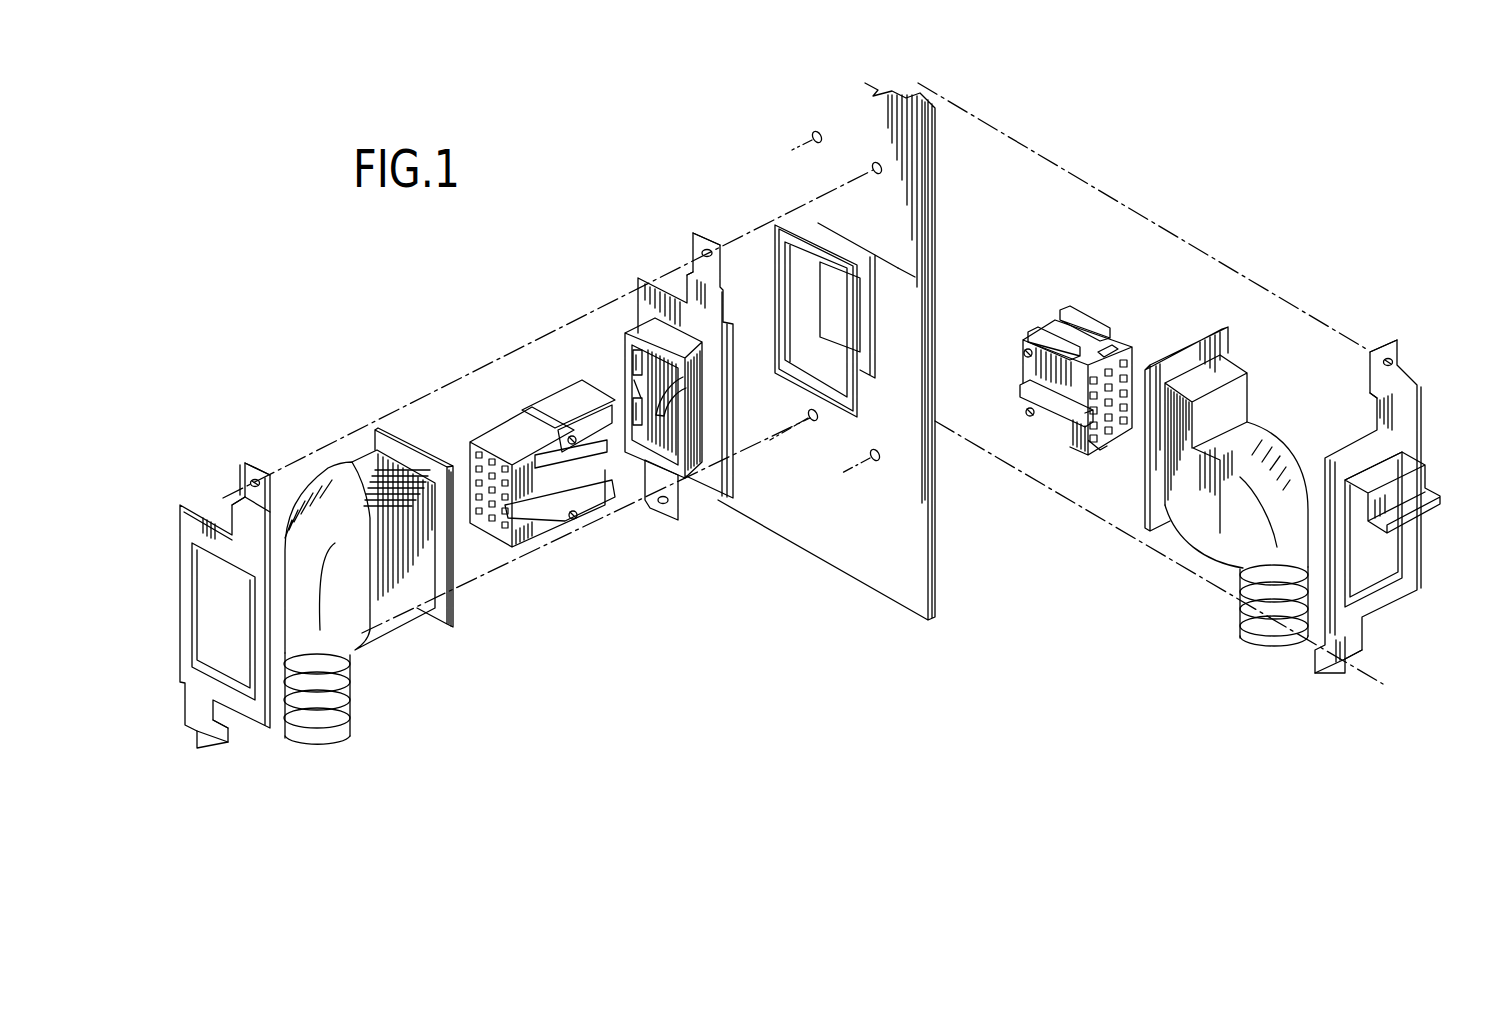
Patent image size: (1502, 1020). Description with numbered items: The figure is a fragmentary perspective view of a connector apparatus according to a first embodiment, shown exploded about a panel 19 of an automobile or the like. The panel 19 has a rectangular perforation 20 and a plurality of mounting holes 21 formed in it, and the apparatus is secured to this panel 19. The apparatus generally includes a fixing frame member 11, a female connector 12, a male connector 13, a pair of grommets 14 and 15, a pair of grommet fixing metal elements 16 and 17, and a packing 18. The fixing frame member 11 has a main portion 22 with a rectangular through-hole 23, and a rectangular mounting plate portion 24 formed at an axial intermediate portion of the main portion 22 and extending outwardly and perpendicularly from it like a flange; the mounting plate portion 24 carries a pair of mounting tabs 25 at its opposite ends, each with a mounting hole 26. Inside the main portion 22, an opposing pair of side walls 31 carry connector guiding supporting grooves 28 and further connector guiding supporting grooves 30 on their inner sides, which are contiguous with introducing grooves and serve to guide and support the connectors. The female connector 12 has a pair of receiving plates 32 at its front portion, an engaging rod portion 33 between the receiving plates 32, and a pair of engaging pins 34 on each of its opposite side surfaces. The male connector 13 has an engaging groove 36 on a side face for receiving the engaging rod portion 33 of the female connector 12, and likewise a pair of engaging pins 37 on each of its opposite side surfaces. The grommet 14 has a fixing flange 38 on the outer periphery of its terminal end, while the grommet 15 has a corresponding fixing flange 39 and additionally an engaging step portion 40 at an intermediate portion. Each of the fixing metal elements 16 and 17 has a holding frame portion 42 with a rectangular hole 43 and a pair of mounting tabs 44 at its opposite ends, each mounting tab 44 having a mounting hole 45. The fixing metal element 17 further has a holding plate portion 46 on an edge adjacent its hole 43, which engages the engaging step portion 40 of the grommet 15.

The fixing frame member 11 is at (695, 374).
The female connector 12 is at (497, 423).
The male connector 13 is at (1092, 316).
The grommet 14 is at (344, 478).
The grommet 15 is at (1226, 462).
The grommet fixing metal element 16 is at (183, 506).
The grommet fixing metal element 17 is at (1419, 412).
The packing 18 is at (777, 224).
The panel 19 is at (893, 86).
The rectangular perforation 20 is at (915, 277).
The mounting holes 21 is at (820, 134).
The main portion 22 is at (704, 468).
The rectangular through-hole 23 is at (729, 492).
The mounting plate portion 24 is at (636, 290).
The mounting tabs 25 is at (708, 248).
The mounting hole 26 is at (694, 240).
The connector guiding supporting grooves 28 is at (636, 426).
The connector guiding supporting grooves 30 is at (703, 428).
The side walls 31 is at (633, 392).
The receiving plates 32 is at (556, 420).
The engaging rod portion 33 is at (557, 447).
The engaging pins 34 is at (573, 519).
The engaging groove 36 is at (1060, 412).
The engaging pins 37 is at (1025, 357).
The fixing flange 38 is at (393, 430).
The fixing flange 39 is at (1192, 340).
The engaging step portion 40 is at (1240, 400).
The holding frame portion 42 is at (796, 544).
The rectangular hole 43 is at (215, 628).
The mounting tabs 44 is at (245, 467).
The mounting hole 45 is at (257, 478).
The holding plate portion 46 is at (1430, 495).